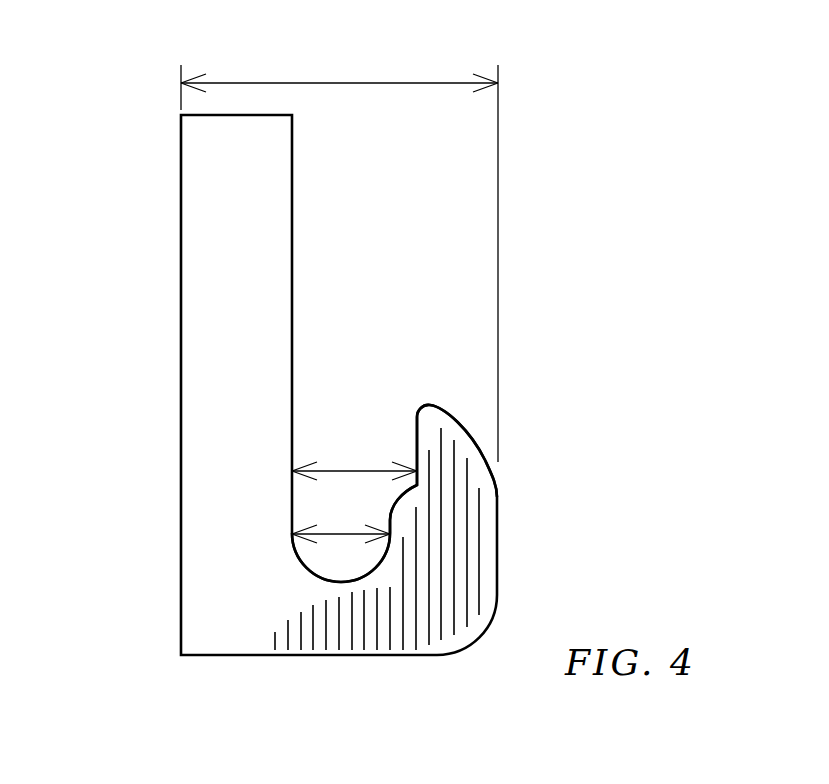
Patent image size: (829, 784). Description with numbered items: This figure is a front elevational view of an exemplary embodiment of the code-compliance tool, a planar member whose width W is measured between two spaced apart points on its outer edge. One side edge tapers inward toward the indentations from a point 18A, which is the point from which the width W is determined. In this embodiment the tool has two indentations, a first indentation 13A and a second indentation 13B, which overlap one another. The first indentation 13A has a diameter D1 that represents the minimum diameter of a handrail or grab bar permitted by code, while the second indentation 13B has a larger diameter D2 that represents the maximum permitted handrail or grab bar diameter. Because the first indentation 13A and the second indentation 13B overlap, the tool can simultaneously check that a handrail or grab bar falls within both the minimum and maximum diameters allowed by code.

The first indentation 13A is at (310, 569).
The second indentation 13B is at (417, 443).
The point on side edge 18A is at (497, 491).
The width W is at (342, 82).
The diameter of first indentation D1 is at (358, 533).
The diameter of second indentation D2 is at (373, 470).